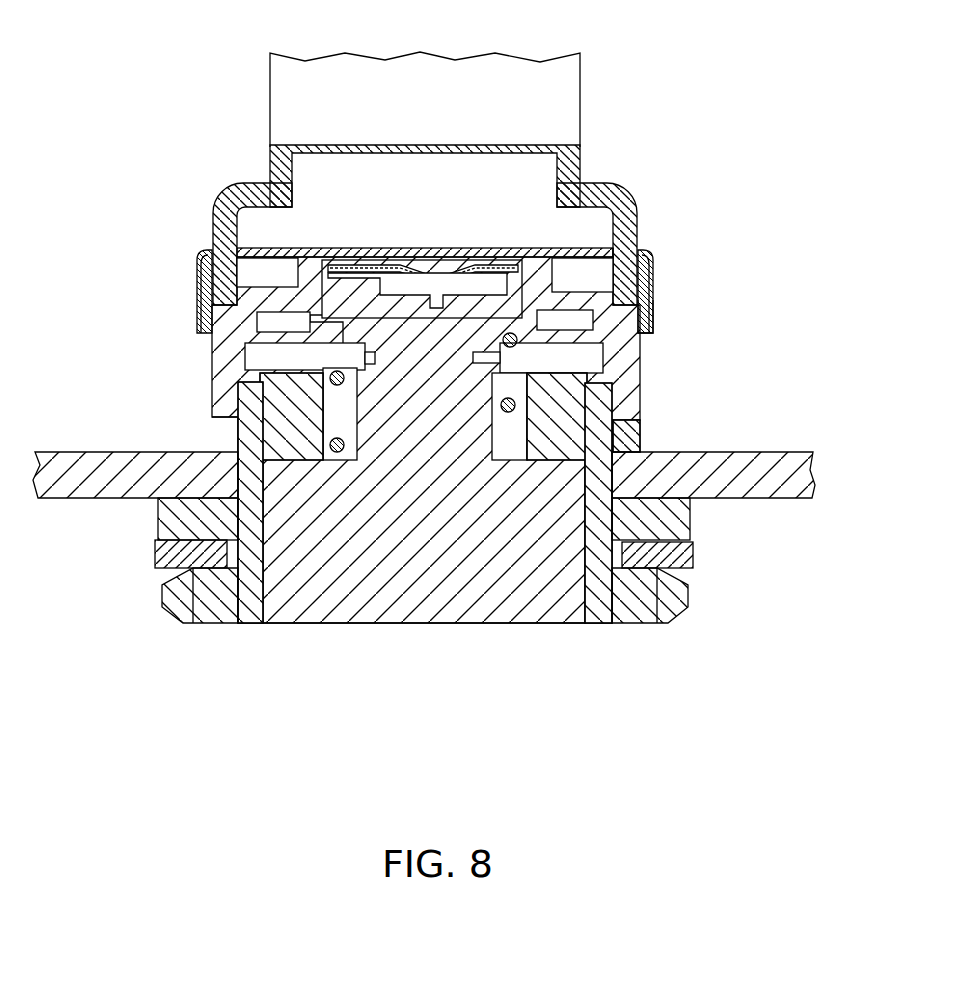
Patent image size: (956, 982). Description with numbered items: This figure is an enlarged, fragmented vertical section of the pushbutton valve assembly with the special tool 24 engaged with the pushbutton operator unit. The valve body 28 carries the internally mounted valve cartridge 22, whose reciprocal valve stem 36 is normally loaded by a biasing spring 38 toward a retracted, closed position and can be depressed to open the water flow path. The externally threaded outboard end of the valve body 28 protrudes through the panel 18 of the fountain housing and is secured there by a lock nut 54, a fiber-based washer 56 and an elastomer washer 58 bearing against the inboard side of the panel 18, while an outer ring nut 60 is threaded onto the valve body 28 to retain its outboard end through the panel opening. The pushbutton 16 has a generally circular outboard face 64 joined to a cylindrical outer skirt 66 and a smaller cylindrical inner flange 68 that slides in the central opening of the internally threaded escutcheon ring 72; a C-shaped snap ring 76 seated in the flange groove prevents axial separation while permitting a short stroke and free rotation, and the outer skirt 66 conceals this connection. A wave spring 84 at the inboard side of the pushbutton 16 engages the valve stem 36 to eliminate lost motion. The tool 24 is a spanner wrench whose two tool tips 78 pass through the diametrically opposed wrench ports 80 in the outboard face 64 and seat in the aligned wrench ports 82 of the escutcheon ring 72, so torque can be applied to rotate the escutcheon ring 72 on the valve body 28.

The pushbutton 16 is at (425, 172).
The panel 18 is at (446, 457).
The valve cartridge 22 is at (424, 572).
The special tool 24 is at (463, 127).
The valve body 28 is at (425, 524).
The valve stem 36 is at (417, 255).
The biasing spring 38 is at (423, 396).
The lock nut 54 is at (434, 618).
The fiber-based washer 56 is at (475, 566).
The elastomer washer 58 is at (464, 522).
The outer ring nut 60 is at (663, 427).
The outboard face 64 is at (422, 212).
The outer skirt 66 is at (682, 313).
The inner flange 68 is at (376, 315).
The escutcheon ring 72 is at (374, 440).
The snap ring 76 is at (470, 346).
The tool tips 78 is at (429, 235).
The pushbutton wrench ports 80 is at (666, 235).
The escutcheon ring wrench ports 82 is at (470, 291).
The wave spring 84 is at (423, 223).